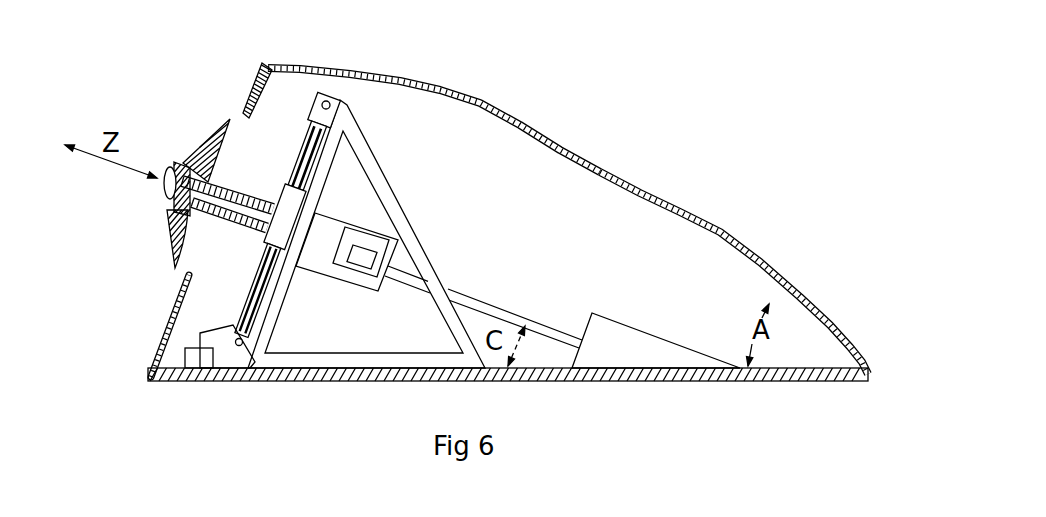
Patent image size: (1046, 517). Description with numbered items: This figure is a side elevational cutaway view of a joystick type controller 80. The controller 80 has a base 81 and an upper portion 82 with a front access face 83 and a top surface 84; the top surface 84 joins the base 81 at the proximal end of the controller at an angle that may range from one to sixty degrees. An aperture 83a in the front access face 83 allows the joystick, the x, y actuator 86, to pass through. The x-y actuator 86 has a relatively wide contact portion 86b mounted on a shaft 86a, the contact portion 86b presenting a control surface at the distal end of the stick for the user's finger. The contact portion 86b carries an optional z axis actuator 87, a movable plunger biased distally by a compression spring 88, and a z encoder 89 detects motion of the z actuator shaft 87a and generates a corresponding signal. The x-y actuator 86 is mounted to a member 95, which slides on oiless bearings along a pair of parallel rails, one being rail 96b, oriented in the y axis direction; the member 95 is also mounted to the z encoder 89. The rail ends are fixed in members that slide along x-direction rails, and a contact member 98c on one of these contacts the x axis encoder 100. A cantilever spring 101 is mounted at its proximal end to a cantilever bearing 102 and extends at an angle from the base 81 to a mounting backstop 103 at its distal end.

The joystick type controller 80 is at (470, 223).
The base 81 is at (508, 402).
The upper portion 82 is at (434, 96).
The front access face 83 is at (130, 326).
The aperture 83a is at (292, 64).
The top surface 84 is at (734, 273).
The x, y actuator 86 is at (144, 147).
The shaft 86a is at (227, 181).
The contact portion 86b is at (123, 239).
The z axis actuator 87 is at (169, 172).
The z actuator shaft 87a is at (228, 237).
The compression spring 88 is at (178, 168).
The z encoder 89 is at (366, 234).
The member 95 is at (277, 184).
The parallel rail 96b is at (296, 152).
The contact member 98c is at (236, 305).
The x axis encoder 100 is at (249, 383).
The cantilever spring 101 is at (483, 299).
The cantilever bearing 102 is at (365, 284).
The mounting backstop 103 is at (656, 318).